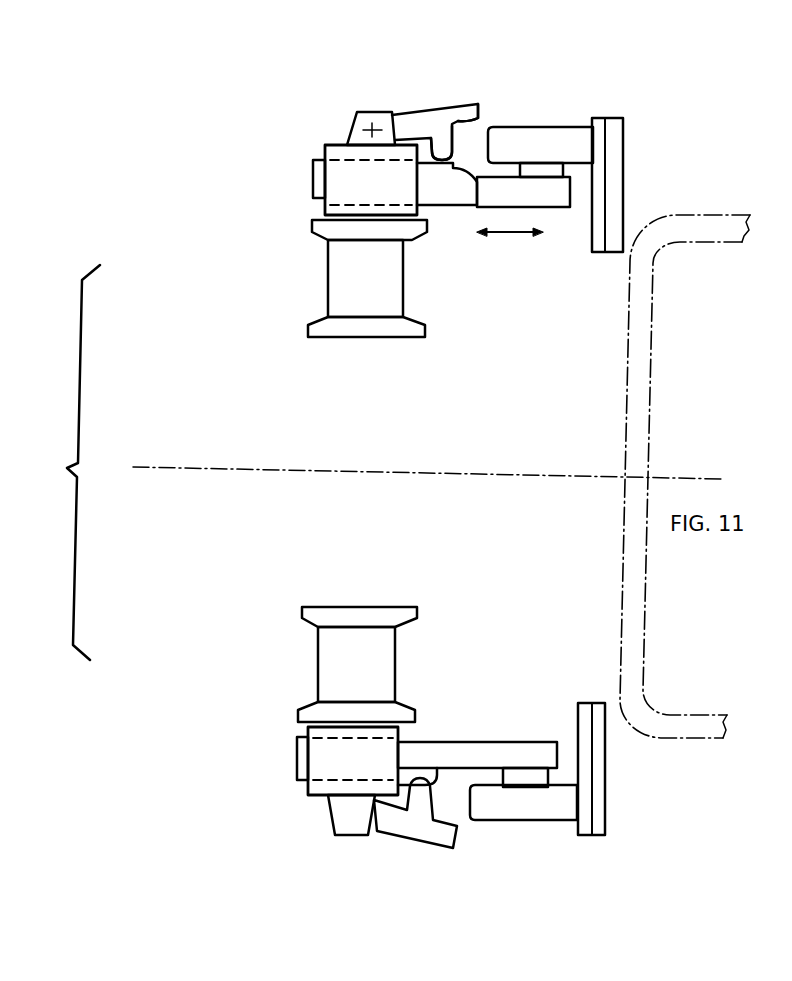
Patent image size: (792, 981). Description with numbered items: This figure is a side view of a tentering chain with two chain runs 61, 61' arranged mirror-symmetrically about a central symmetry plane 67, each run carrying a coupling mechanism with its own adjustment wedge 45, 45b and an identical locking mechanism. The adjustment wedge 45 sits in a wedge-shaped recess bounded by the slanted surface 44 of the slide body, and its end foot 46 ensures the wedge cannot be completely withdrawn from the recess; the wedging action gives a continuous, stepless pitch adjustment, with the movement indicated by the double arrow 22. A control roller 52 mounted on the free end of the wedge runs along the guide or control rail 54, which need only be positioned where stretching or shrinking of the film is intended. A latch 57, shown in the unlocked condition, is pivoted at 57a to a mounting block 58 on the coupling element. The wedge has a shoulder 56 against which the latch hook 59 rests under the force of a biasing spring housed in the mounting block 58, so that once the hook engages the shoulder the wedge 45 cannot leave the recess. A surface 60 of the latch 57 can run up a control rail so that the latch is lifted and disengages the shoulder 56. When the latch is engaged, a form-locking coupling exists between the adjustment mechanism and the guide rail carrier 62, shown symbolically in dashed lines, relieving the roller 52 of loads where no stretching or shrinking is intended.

The direction of movement 22 is at (505, 233).
The slanted surface 44 is at (338, 160).
The adjustment wedge 45 is at (440, 200).
The adjustment wedge 45b is at (418, 753).
The end foot 46 is at (313, 178).
The control roller 52 is at (550, 140).
The guide or control rail 54 is at (607, 153).
The shoulder 56 is at (475, 182).
The latch 57 is at (423, 120).
The pivot 57a is at (373, 128).
The mounting block 58 is at (358, 113).
The latch hook 59 is at (450, 112).
The surface 60 is at (477, 123).
The chain run 61 is at (342, 278).
The chain run 61' is at (335, 664).
The guide rail carrier 62 is at (632, 412).
The central symmetry plane 67 is at (335, 474).